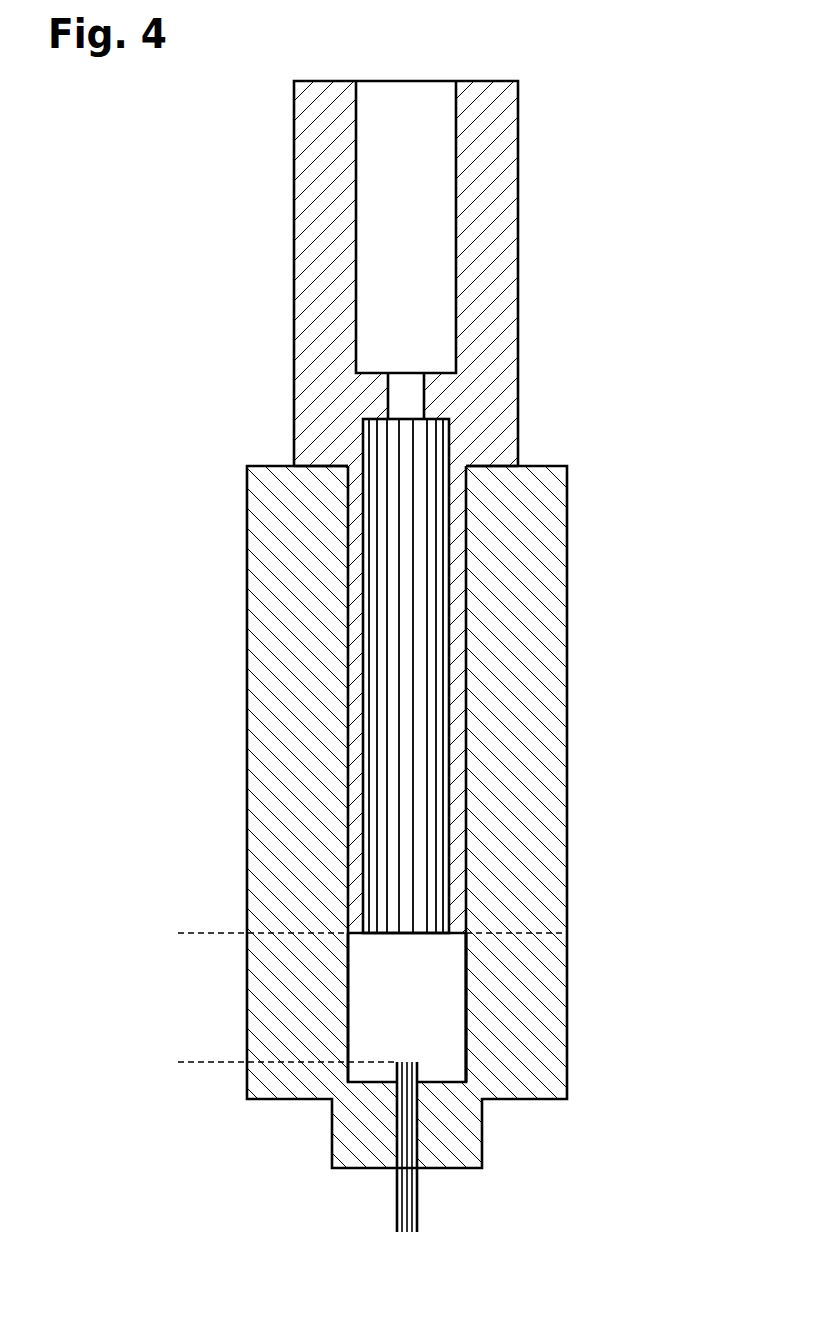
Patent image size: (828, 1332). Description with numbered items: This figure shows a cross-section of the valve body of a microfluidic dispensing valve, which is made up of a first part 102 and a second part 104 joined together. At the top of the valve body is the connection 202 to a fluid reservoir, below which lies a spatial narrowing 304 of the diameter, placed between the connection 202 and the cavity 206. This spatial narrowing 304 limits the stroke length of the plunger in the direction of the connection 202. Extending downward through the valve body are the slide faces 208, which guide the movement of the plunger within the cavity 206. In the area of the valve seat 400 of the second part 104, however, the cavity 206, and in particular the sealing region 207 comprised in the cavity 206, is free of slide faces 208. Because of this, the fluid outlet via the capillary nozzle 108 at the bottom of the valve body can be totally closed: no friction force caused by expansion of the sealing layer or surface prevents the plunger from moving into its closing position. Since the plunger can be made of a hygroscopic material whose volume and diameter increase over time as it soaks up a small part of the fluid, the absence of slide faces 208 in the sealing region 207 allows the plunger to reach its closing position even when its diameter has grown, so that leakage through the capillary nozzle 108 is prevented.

The first part of the valve body 102 is at (507, 292).
The second part of the valve body 104 is at (537, 777).
The capillary nozzle 108 is at (413, 1198).
The connection to a fluid reservoir 202 is at (425, 172).
The cavity 206 is at (430, 934).
The sealing region 207 is at (468, 1022).
The slide faces 208 is at (418, 628).
The spatial narrowing 304 is at (413, 405).
The valve seat 400 is at (178, 933).